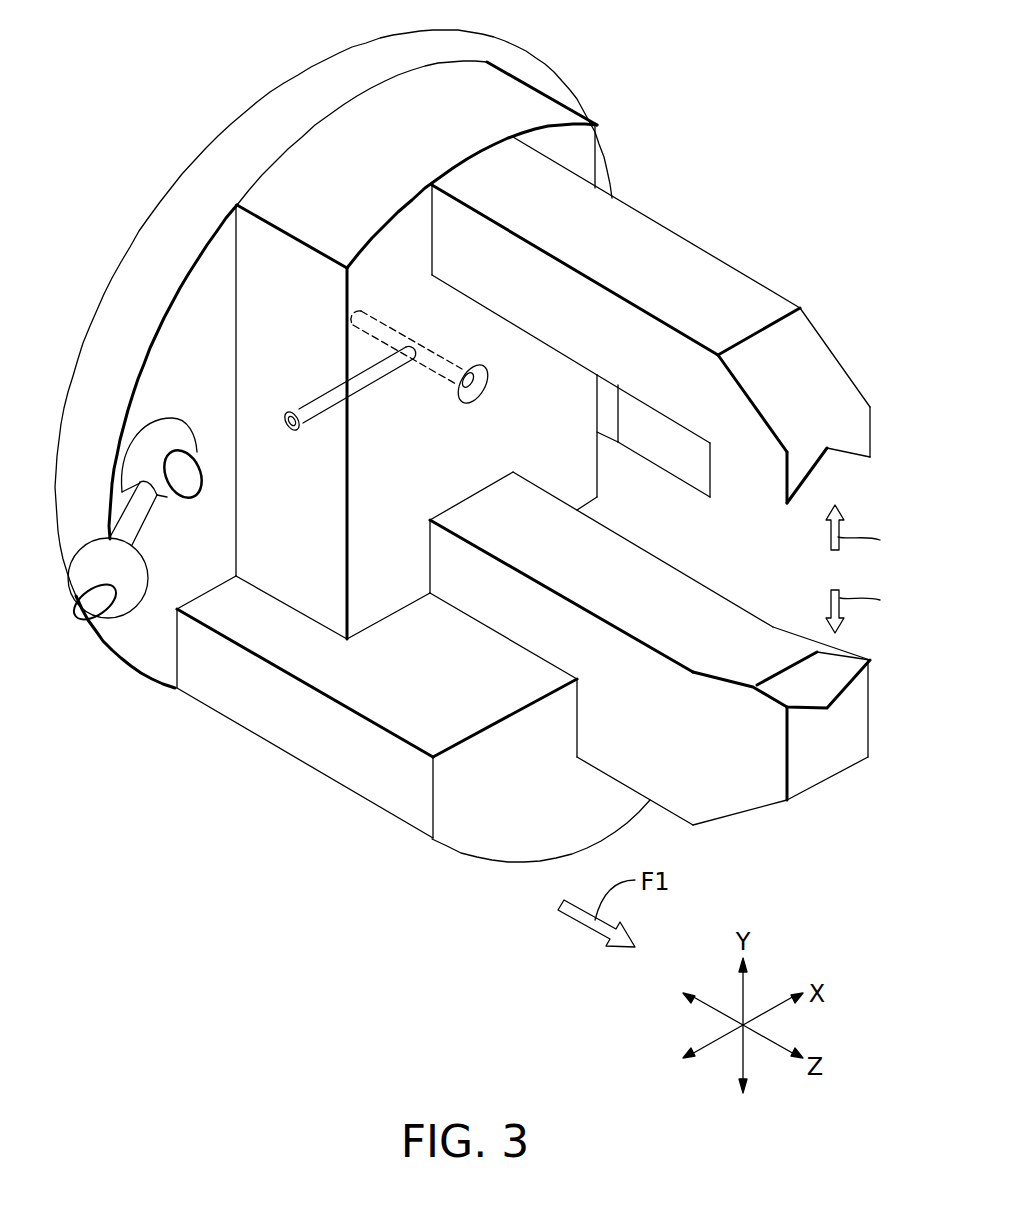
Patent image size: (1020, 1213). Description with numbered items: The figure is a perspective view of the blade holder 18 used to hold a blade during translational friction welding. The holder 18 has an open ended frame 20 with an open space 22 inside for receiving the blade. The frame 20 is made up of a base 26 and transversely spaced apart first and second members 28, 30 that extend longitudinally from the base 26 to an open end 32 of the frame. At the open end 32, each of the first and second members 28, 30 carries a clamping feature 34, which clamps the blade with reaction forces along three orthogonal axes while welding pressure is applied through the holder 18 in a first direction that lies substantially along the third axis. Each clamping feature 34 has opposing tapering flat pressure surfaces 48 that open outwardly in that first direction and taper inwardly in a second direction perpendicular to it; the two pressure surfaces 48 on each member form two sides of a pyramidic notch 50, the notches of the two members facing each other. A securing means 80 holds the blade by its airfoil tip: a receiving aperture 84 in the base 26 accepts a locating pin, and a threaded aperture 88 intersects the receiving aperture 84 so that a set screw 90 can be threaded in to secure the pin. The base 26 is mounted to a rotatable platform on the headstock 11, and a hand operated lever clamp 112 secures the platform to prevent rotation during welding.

The headstock 11 is at (450, 48).
The holder 18 is at (702, 255).
The open ended frame 20 is at (758, 302).
The open space 22 is at (541, 455).
The base 26 is at (587, 140).
The first member 28 is at (678, 790).
The second member 30 is at (450, 264).
The open end 32 is at (836, 585).
The clamping feature 34 is at (848, 452).
The opposing tapering pressure surfaces 48 is at (813, 470).
The pyramidic notch 50 is at (797, 660).
The securing means 80 is at (414, 394).
The receiving aperture 84 is at (482, 386).
The threaded aperture 88 is at (336, 385).
The set screw 90 is at (291, 432).
The hand operated lever clamp 112 is at (90, 603).